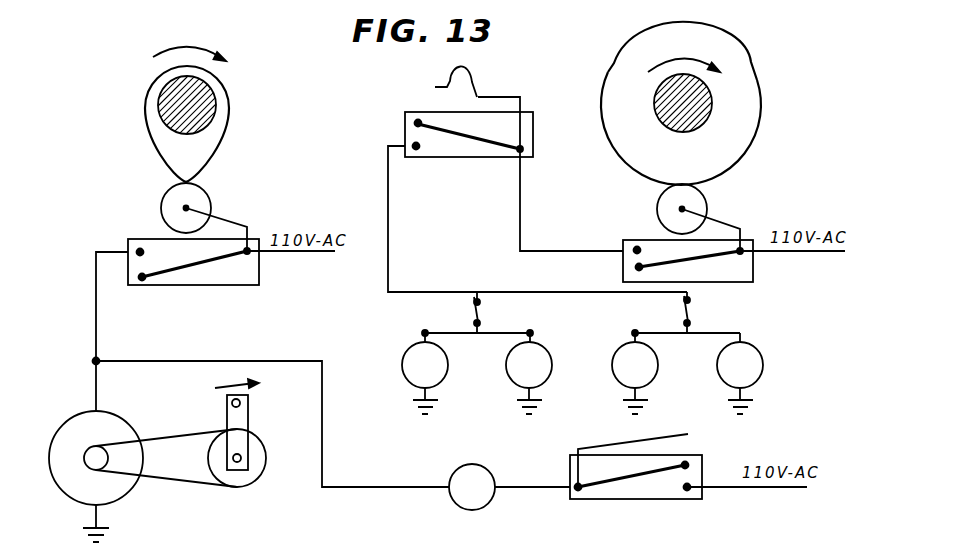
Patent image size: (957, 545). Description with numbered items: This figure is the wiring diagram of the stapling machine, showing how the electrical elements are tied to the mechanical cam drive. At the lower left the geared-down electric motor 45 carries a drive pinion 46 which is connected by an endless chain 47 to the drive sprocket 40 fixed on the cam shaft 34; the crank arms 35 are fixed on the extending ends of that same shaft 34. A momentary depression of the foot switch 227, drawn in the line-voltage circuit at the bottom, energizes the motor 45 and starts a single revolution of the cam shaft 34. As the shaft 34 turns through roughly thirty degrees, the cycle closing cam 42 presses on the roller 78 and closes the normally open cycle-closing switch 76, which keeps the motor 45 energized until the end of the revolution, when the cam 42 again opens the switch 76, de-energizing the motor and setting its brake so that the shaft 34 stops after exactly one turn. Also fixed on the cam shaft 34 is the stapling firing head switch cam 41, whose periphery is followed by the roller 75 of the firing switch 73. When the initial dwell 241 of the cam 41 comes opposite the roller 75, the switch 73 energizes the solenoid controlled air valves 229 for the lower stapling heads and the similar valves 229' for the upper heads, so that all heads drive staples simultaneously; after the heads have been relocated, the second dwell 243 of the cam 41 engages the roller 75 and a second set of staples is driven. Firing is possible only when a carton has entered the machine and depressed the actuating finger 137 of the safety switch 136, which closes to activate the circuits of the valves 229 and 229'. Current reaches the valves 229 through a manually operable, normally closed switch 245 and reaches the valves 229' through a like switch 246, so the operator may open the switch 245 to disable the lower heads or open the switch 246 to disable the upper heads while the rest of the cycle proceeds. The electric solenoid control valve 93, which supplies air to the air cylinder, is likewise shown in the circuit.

The cam shaft 34 is at (205, 88).
The cycle closing cam 42 is at (205, 140).
The roller 78 is at (169, 202).
The cycle-closing switch 76 is at (249, 240).
The electric motor 45 is at (117, 431).
The drive pinion 46 is at (92, 462).
The endless chain 47 is at (175, 480).
The drive sprocket 40 is at (252, 473).
The crank arms 35 is at (238, 417).
The safety switch 136 is at (484, 150).
The actuating finger 137 is at (474, 74).
The manually operable normally closed switch 245 is at (479, 313).
The manually operable normally closed switch 246 is at (688, 315).
The solenoid controlled air valves 229 is at (477, 372).
The solenoid controlled air valves 229' is at (687, 372).
The stapling firing head switch cam 41 is at (720, 160).
The second dwell 243 is at (644, 45).
The initial dwell 241 is at (740, 62).
The roller 75 is at (670, 202).
The switch 73 is at (742, 240).
The electric solenoid control valve 93 is at (467, 463).
The foot switch 227 is at (663, 488).